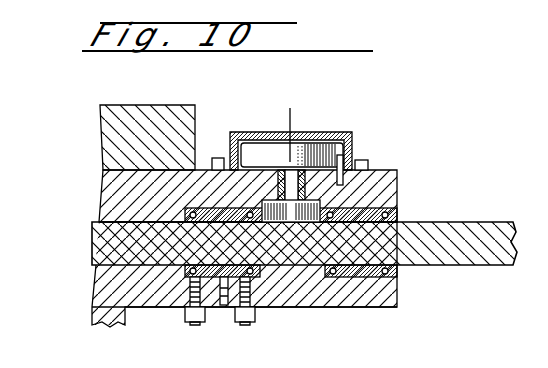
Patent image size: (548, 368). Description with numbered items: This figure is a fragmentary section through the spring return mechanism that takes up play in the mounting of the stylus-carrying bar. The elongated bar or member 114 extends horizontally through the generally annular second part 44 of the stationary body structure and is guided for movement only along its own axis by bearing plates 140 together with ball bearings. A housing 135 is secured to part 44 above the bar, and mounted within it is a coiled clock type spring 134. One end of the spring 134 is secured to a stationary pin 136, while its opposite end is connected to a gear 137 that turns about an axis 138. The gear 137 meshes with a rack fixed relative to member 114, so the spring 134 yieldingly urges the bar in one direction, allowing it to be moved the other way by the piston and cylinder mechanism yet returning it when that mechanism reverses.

The second part 44 is at (100, 198).
The elongated bar or member 114 is at (480, 265).
The coiled clock type spring 134 is at (332, 150).
The housing 135 is at (251, 105).
The stationary pin 136 is at (345, 150).
The gear 137 is at (297, 222).
The axis 138 is at (290, 118).
The bearing plates 140 is at (398, 200).